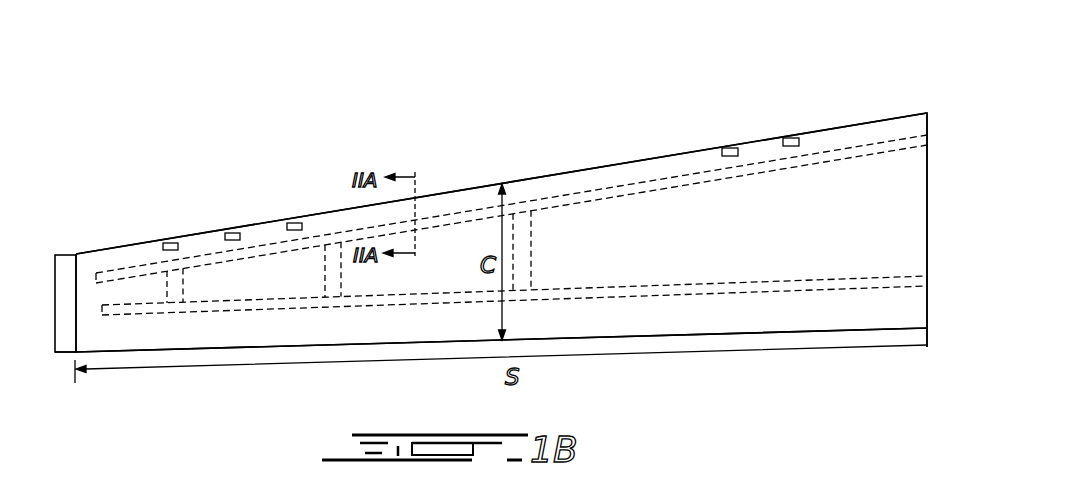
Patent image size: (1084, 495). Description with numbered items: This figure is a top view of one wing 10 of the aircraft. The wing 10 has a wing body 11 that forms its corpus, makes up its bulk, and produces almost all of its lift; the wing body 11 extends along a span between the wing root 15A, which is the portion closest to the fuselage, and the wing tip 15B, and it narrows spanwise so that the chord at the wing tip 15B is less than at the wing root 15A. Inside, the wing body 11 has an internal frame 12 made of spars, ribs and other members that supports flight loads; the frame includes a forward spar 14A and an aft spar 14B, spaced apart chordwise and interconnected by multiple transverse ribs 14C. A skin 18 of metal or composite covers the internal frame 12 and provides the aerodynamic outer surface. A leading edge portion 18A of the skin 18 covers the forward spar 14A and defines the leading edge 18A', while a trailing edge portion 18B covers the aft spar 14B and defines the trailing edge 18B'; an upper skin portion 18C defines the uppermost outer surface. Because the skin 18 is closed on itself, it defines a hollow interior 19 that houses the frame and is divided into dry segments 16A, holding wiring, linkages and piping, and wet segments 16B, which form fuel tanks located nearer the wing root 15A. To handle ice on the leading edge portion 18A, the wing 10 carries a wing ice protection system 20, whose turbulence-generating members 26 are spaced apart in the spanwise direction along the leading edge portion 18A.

The wing 10 is at (292, 163).
The wing body 11 is at (694, 157).
The internal frame 12 is at (853, 176).
The forward spar 14A is at (637, 190).
The aft spar 14B is at (805, 277).
The transverse ribs 14C is at (183, 284).
The wing root 15A is at (926, 98).
The wing tip 15B is at (76, 238).
The dry segments 16A is at (125, 289).
The wet segments 16B is at (465, 275).
The skin 18 is at (890, 308).
The leading edge portion 18A is at (654, 209).
The leading edge 18A' is at (417, 138).
The trailing edge portion 18B is at (647, 293).
The trailing edge 18B' is at (711, 319).
The upper skin portion 18C is at (805, 208).
The hollow interior 19 is at (487, 237).
The wing ice protection system 20 is at (62, 371).
The turbulence-generating members 26 is at (293, 223).